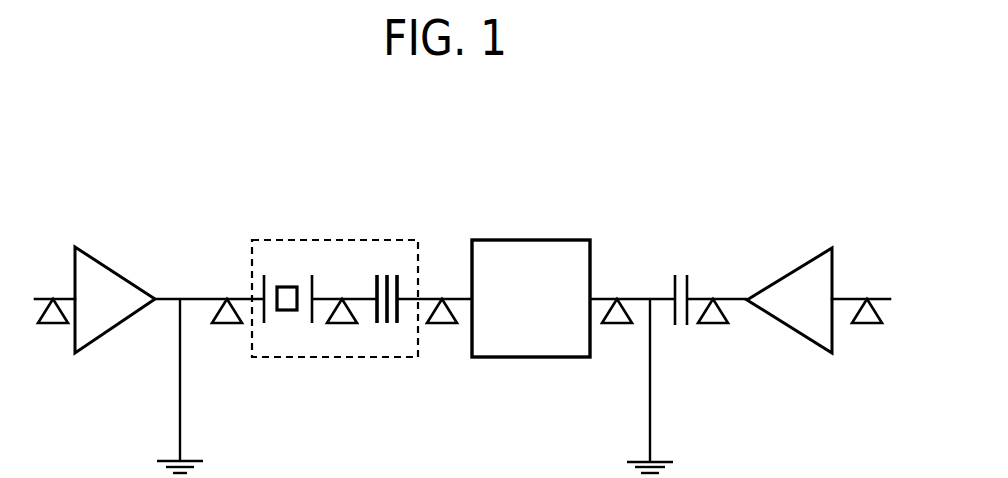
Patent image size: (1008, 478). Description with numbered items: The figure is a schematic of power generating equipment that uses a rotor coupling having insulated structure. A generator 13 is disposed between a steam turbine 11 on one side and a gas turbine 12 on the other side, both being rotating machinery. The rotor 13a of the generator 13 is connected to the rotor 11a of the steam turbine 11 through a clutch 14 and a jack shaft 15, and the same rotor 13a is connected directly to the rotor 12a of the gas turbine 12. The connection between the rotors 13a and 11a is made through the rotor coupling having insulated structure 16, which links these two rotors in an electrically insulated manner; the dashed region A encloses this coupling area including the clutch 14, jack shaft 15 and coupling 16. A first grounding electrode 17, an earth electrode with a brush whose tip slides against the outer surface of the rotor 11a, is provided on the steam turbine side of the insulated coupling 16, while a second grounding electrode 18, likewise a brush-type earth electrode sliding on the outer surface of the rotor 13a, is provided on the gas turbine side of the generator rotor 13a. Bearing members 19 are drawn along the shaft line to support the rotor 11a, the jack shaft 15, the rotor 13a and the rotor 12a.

The steam turbine 11 is at (109, 266).
The rotor of the steam turbine 11a is at (167, 297).
The gas turbine 12 is at (792, 268).
The rotor of the gas turbine 12a is at (702, 299).
The generator 13 is at (542, 240).
The rotor of the generator 13a is at (412, 300).
The clutch 14 is at (284, 287).
The jack shaft 15 is at (352, 297).
The rotor coupling having insulated structure 16 is at (376, 289).
The first grounding electrode 17 is at (180, 420).
The second grounding electrode 18 is at (650, 424).
The bearing members 19 is at (228, 324).
The resonator unit (dashed region) A is at (322, 240).